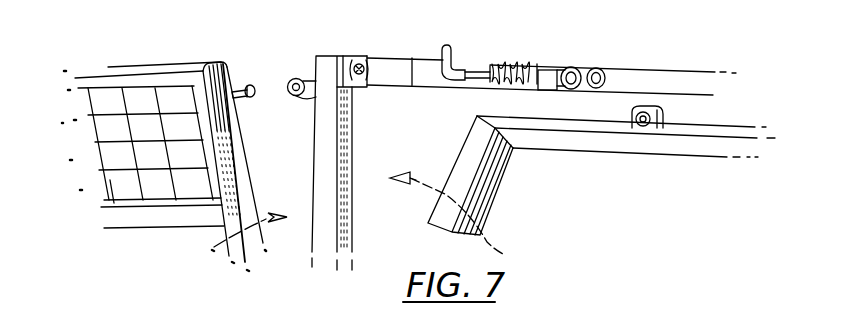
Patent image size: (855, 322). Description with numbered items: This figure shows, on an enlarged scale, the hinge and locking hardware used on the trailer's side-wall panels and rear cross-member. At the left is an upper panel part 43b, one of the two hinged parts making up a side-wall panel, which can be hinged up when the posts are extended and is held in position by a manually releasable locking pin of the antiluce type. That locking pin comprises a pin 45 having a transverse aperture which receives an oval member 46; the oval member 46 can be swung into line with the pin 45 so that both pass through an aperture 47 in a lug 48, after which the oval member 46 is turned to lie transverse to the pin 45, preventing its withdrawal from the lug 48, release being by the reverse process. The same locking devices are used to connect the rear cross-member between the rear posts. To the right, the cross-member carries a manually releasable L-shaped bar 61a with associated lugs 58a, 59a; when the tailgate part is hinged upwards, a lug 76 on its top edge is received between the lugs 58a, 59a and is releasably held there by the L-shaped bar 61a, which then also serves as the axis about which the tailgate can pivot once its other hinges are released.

The panel part 43b is at (163, 71).
The pin 45 is at (236, 86).
The oval member 46 is at (368, 62).
The aperture 47 is at (297, 78).
The lug 48 is at (312, 98).
The L-shaped bar 61a is at (470, 63).
The lug 58a is at (570, 66).
The lug 59a is at (606, 68).
The lug 76 is at (648, 132).